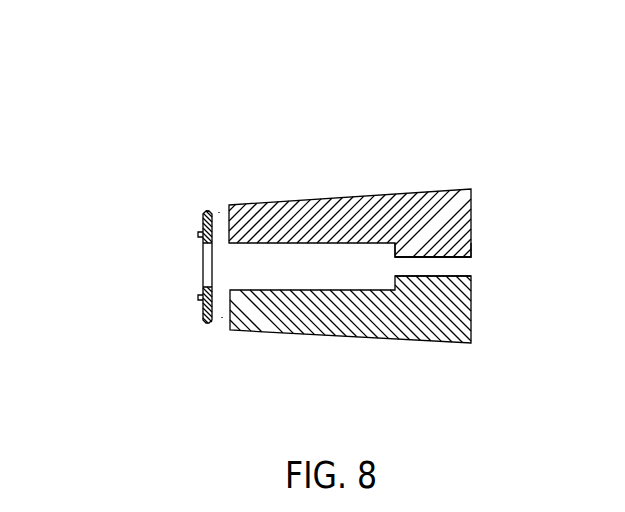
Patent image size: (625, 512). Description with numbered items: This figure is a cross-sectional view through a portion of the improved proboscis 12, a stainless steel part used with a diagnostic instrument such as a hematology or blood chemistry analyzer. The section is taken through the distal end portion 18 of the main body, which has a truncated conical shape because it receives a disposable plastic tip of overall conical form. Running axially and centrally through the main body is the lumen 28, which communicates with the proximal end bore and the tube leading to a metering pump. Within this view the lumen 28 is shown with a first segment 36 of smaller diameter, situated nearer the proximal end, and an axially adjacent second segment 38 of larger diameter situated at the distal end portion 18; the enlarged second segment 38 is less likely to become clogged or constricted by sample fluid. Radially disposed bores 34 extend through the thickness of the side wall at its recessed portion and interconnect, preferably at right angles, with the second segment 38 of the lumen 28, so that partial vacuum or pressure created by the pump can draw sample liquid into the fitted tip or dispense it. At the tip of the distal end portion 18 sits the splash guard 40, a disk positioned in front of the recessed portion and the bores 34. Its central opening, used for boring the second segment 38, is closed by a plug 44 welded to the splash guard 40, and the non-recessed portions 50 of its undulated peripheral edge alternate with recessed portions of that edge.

The proboscis 12 is at (96, 66).
The distal end portion 18 is at (365, 338).
The lumen 28 is at (468, 264).
The radially disposed bores 34 is at (219, 212).
The first segment 36 is at (427, 260).
The second segment 38 is at (337, 253).
The splash guard 40 is at (207, 210).
The plug 44 is at (202, 255).
The non-recessed portions 50 is at (203, 211).